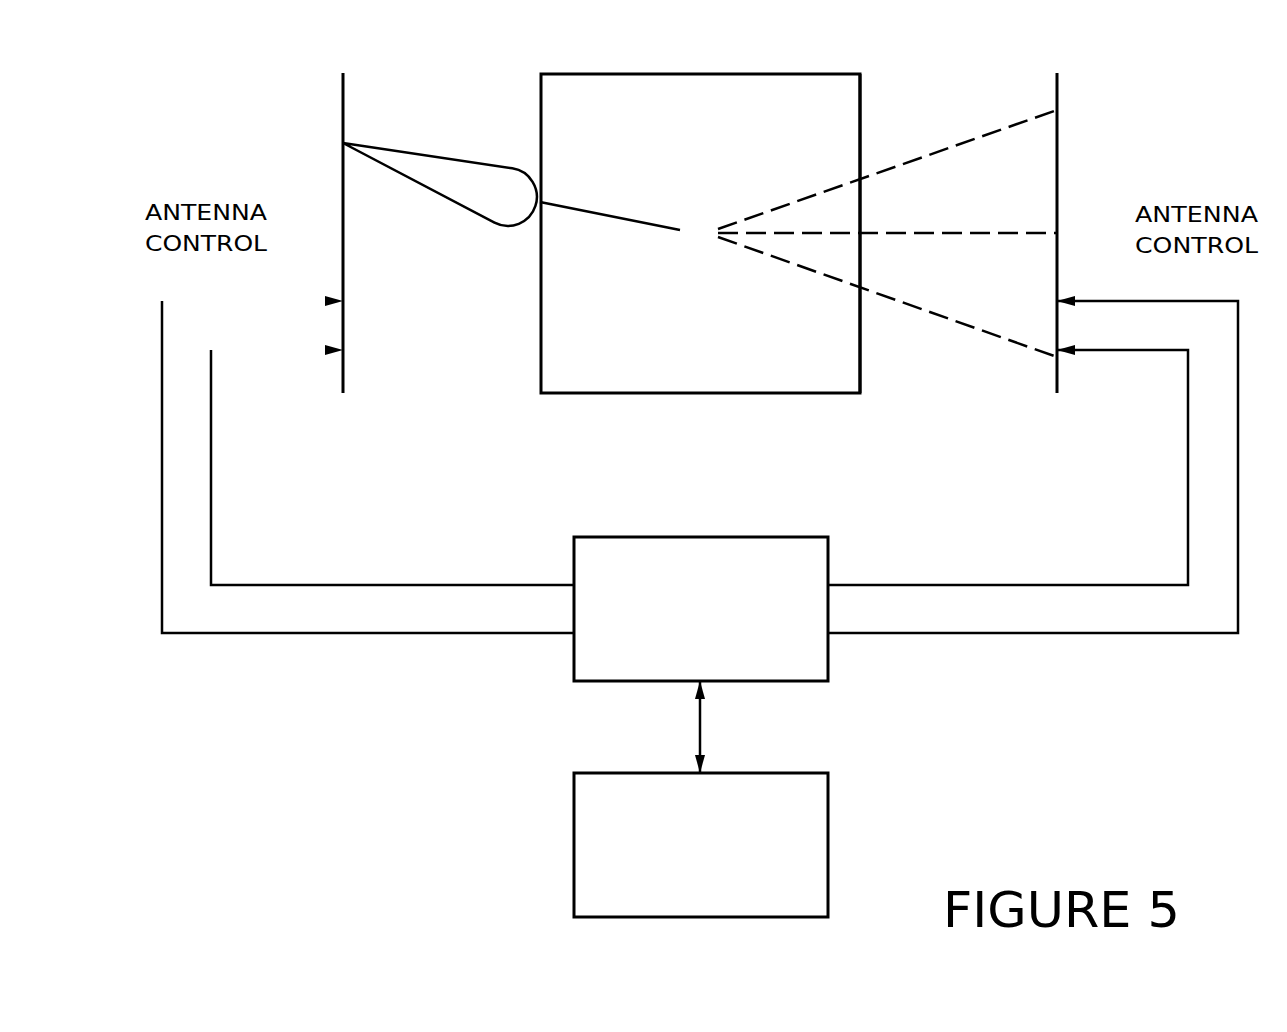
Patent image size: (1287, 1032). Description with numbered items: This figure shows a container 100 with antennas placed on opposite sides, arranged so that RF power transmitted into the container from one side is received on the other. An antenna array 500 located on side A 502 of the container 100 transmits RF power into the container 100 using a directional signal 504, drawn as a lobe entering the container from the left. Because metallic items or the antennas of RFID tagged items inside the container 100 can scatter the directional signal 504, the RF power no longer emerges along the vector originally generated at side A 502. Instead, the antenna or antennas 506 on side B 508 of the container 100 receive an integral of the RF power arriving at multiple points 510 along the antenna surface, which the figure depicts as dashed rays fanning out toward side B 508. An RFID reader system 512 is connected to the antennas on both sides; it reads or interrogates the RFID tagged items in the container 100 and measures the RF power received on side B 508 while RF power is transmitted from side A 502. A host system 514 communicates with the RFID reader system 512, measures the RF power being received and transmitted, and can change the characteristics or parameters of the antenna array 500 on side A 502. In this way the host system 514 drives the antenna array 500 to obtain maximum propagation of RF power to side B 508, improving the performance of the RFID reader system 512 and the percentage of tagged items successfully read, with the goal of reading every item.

The container 100 is at (713, 86).
The antenna array 500 is at (457, 175).
The side A 502 is at (540, 277).
The directional signal 504 is at (623, 215).
The antenna 506 is at (1057, 142).
The side B 508 is at (860, 93).
The multiple points 510 is at (1003, 128).
The RFID reader system 512 is at (787, 537).
The host system 514 is at (787, 773).